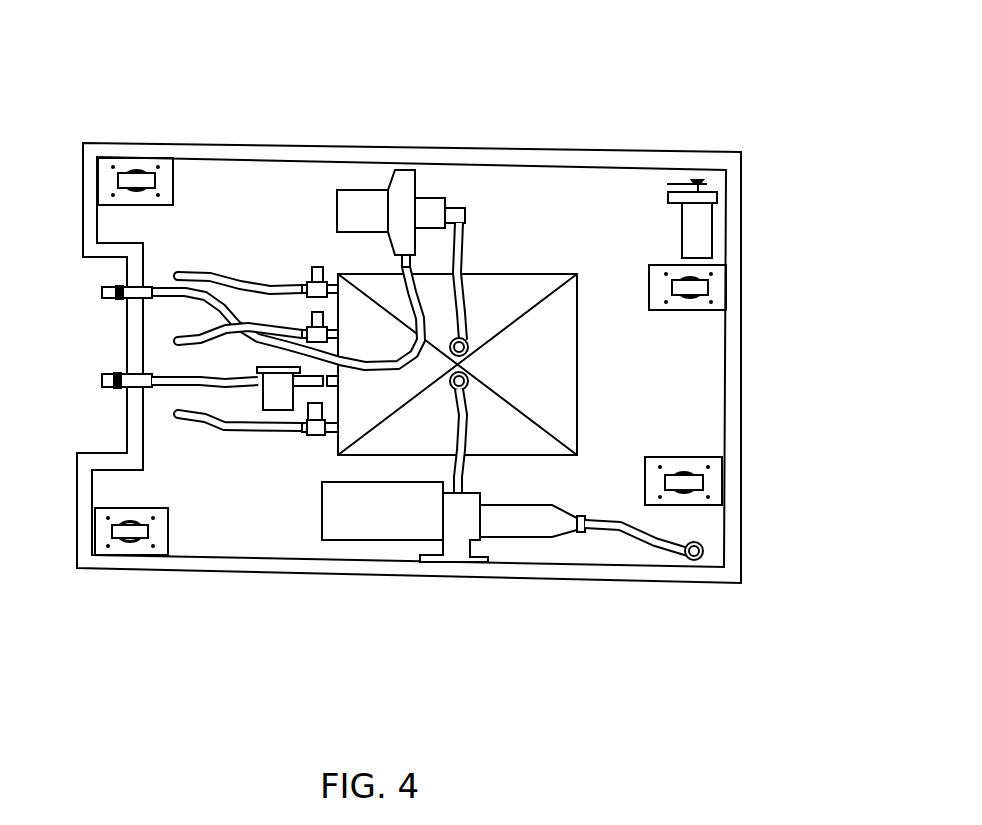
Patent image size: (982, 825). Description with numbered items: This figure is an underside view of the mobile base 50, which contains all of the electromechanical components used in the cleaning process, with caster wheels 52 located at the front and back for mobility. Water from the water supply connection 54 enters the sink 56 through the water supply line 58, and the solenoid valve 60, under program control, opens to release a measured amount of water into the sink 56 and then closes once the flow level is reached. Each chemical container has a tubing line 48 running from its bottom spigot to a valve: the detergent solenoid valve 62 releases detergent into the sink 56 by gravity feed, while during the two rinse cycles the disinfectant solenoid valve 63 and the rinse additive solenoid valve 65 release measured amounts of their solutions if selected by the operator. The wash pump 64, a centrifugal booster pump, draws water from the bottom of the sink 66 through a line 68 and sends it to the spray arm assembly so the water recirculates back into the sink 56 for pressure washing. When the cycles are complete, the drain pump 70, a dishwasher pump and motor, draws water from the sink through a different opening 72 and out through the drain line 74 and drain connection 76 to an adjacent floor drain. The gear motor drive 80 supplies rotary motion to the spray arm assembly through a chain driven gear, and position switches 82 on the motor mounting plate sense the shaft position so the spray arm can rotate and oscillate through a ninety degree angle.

The tubing line 48 is at (283, 287).
The base 50 is at (742, 403).
The caster wheels 52 is at (145, 172).
The water supply connection 54 is at (103, 385).
The sink 56 is at (556, 288).
The water supply line 58 is at (173, 383).
The solenoid valve 60 is at (268, 412).
The detergent solenoid valve 62 is at (305, 437).
The disinfectant solenoid valve 63 is at (308, 308).
The wash pump 64 is at (383, 540).
The rinse additive solenoid valve 65 is at (317, 265).
The bottom of the sink 66 is at (453, 385).
The line 68 is at (615, 532).
The drain pump 70 is at (408, 172).
The opening 72 is at (513, 285).
The drain line 74 is at (408, 262).
The drain connection 76 is at (103, 298).
The gear motor drive 80 is at (705, 220).
The position switches 82 is at (673, 183).